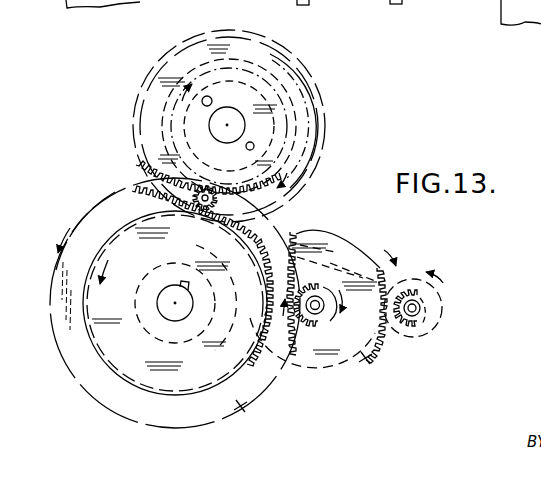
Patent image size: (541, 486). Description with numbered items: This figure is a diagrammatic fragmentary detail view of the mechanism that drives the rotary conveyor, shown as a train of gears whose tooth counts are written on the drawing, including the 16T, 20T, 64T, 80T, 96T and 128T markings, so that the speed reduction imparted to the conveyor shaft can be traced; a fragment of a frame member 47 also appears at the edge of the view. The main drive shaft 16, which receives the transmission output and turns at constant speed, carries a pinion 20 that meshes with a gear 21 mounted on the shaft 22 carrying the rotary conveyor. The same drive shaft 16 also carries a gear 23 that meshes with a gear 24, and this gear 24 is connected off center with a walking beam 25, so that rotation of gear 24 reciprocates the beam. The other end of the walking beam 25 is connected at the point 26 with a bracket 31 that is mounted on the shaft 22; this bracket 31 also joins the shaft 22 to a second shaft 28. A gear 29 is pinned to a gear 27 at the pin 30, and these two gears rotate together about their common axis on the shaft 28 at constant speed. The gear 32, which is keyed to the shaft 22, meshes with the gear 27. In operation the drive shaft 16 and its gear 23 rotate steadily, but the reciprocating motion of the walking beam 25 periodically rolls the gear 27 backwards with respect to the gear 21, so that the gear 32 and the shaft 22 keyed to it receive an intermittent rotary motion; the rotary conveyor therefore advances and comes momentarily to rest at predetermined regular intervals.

The main drive shaft 16 is at (320, 312).
The 16-tooth pinion 16T is at (318, 330).
The pinion 20 is at (307, 326).
The 20-tooth gear 20T is at (435, 333).
The gear 21 is at (249, 415).
The shaft 22 is at (178, 320).
The gear 23 is at (339, 310).
The gear 24 is at (406, 281).
The walking beam 25 is at (307, 243).
The connection 26 is at (273, 205).
The gear 27 is at (166, 153).
The shaft 28 is at (242, 118).
The gear 29 is at (279, 57).
The pin 30 is at (208, 96).
The bracket 31 is at (178, 128).
The gear 32 is at (197, 383).
The frame member 47 is at (121, 5).
The 64-tooth gear 64T is at (297, 117).
The 80-tooth gear 80T is at (381, 310).
The 96-tooth gear 96T is at (328, 95).
The 128-tooth gear 128T is at (109, 189).